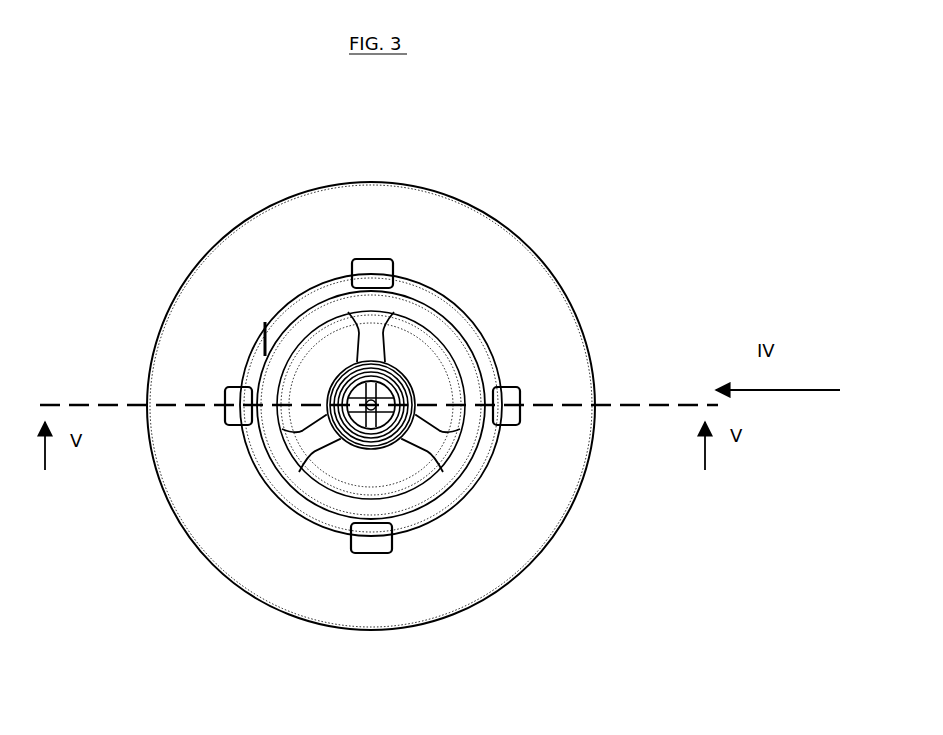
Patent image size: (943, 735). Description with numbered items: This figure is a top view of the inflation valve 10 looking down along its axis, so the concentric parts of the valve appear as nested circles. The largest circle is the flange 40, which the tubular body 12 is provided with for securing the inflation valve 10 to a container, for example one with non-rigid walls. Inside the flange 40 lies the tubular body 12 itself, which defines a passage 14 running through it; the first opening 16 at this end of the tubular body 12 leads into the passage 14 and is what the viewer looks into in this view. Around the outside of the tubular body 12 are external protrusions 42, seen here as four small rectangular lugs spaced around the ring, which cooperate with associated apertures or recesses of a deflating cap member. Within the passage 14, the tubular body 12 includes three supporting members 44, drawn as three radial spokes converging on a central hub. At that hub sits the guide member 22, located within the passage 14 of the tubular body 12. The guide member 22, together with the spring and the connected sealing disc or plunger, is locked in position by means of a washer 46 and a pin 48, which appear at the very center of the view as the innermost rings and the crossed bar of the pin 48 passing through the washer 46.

The inflation valve 10 is at (82, 80).
The tubular body 12 is at (437, 485).
The passage 14 is at (437, 415).
The first opening 16 is at (415, 340).
The guide member 22 is at (383, 365).
The flange 40 is at (278, 552).
The external protrusions 42 is at (366, 275).
The supporting members 44 is at (437, 448).
The washer 46 is at (412, 400).
The pin 48 is at (376, 380).